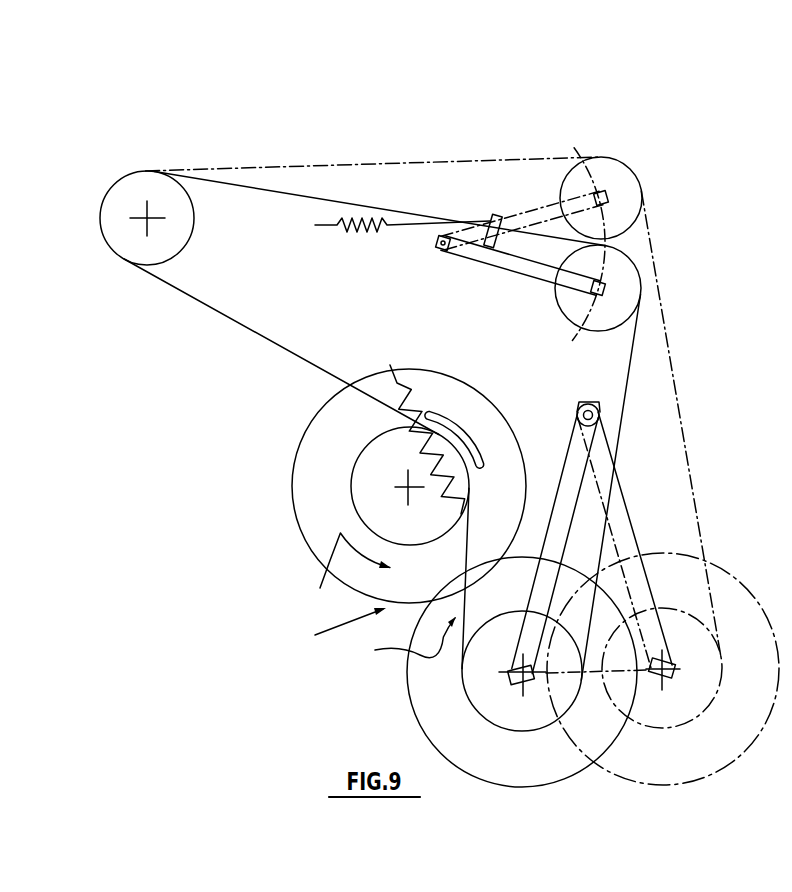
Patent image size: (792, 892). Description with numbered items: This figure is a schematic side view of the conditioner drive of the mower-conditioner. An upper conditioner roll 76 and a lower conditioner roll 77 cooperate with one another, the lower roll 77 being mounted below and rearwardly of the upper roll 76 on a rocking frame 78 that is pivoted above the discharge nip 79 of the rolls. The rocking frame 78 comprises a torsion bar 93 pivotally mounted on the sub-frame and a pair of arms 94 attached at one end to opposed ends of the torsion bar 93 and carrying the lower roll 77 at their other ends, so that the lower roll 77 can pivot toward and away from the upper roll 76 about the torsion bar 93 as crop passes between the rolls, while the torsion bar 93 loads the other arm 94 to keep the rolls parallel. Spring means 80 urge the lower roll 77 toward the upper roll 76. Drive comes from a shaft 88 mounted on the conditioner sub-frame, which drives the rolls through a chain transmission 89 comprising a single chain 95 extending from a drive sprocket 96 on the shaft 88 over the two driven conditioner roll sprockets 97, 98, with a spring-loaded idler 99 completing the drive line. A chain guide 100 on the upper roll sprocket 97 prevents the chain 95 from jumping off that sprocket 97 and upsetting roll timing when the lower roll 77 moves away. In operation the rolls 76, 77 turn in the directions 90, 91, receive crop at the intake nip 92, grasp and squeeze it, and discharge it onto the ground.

The upper conditioner roll 76 is at (507, 418).
The lower conditioner roll 77 is at (567, 778).
The rocking frame 78 is at (582, 502).
The discharge nip 79 is at (532, 533).
The spring means 80 is at (390, 365).
The shaft 88 is at (145, 220).
The chain transmission 89 is at (385, 157).
The direction of rotation of the upper conditioner roll 90 is at (345, 573).
The direction of rotation of the lower conditioner roll 91 is at (396, 640).
The intake nip 92 is at (328, 627).
The torsion bar 93 is at (603, 409).
The arms 94 is at (563, 460).
The chain 95 is at (240, 187).
The drive sprocket 96 is at (198, 214).
The upper roll sprocket 97 is at (351, 475).
The lower roll sprocket 98 is at (543, 728).
The spring-loaded idler 99 is at (642, 218).
The chain guide 100 is at (460, 430).